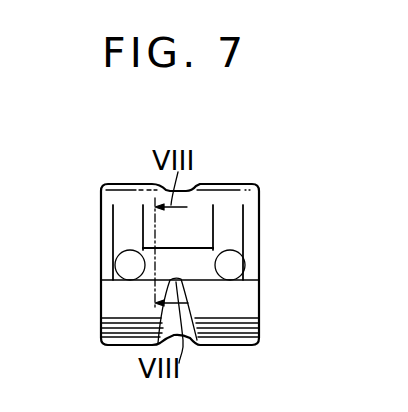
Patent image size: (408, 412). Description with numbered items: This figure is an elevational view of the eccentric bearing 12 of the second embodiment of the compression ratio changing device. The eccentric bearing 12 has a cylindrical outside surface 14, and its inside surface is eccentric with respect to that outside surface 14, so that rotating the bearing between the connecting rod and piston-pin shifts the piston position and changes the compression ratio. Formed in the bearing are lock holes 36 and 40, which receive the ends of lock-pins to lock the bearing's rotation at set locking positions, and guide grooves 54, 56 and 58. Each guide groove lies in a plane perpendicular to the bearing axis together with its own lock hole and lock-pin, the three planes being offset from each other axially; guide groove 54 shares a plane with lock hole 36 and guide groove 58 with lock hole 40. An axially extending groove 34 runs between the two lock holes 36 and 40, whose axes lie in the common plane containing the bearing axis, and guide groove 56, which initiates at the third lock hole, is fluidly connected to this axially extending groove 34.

The eccentric bearing 12 is at (242, 346).
The cylindrical outside surface 14 is at (113, 345).
The axially extending groove 34 is at (192, 256).
The lock hole 36 is at (128, 282).
The lock hole 40 is at (229, 272).
The guide groove 54 is at (130, 217).
The guide groove 56 is at (197, 340).
The guide groove 58 is at (234, 226).